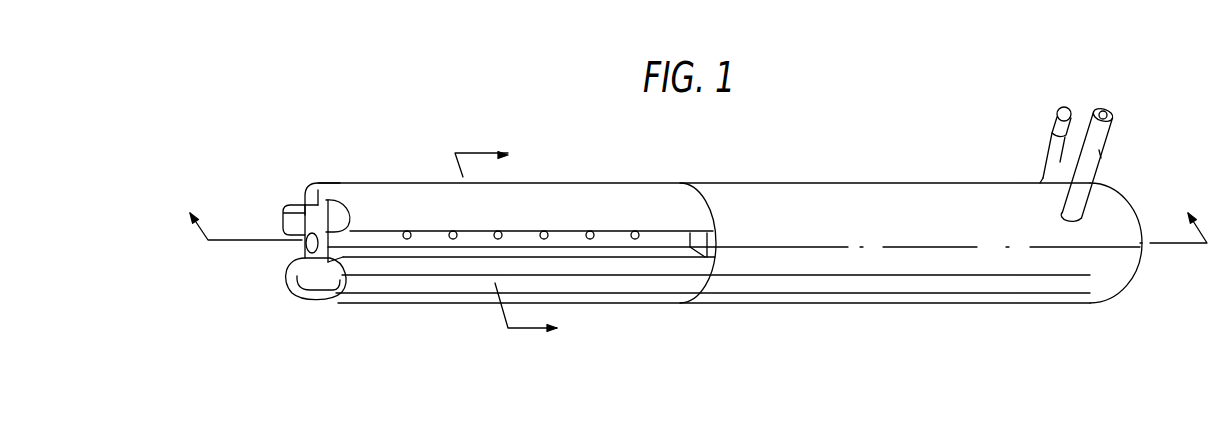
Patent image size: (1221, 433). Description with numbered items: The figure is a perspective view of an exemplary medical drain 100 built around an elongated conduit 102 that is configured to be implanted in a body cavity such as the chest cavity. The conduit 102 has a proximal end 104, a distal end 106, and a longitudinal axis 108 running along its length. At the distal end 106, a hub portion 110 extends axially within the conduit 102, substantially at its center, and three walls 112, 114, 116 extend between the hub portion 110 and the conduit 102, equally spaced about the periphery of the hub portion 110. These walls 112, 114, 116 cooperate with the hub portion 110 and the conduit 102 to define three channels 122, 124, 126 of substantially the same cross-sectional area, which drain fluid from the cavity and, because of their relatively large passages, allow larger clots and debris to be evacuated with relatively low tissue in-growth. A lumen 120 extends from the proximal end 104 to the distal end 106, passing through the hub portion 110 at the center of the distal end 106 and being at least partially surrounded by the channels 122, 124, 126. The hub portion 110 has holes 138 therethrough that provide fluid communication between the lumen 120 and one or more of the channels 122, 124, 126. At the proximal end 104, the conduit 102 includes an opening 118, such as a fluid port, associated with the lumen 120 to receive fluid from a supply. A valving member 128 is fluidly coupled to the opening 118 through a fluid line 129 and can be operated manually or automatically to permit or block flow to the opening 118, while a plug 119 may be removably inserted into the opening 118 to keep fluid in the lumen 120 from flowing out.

The drain 100 is at (243, 121).
The elongated conduit 102 is at (681, 307).
The proximal end 104 is at (1083, 312).
The distal end 106 is at (313, 310).
The longitudinal axis 108 is at (1177, 243).
The hub portion 110 is at (300, 230).
The wall 112 is at (303, 203).
The wall 114 is at (300, 281).
The wall 116 is at (333, 262).
The opening 118 is at (1062, 212).
The plug 119 is at (1057, 122).
The lumen 120 is at (305, 246).
The channel 122 is at (325, 213).
The channel 124 is at (283, 235).
The channel 126 is at (280, 285).
The valving member 128 is at (1105, 112).
The fluid line 129 is at (1101, 157).
The holes 138 is at (543, 231).